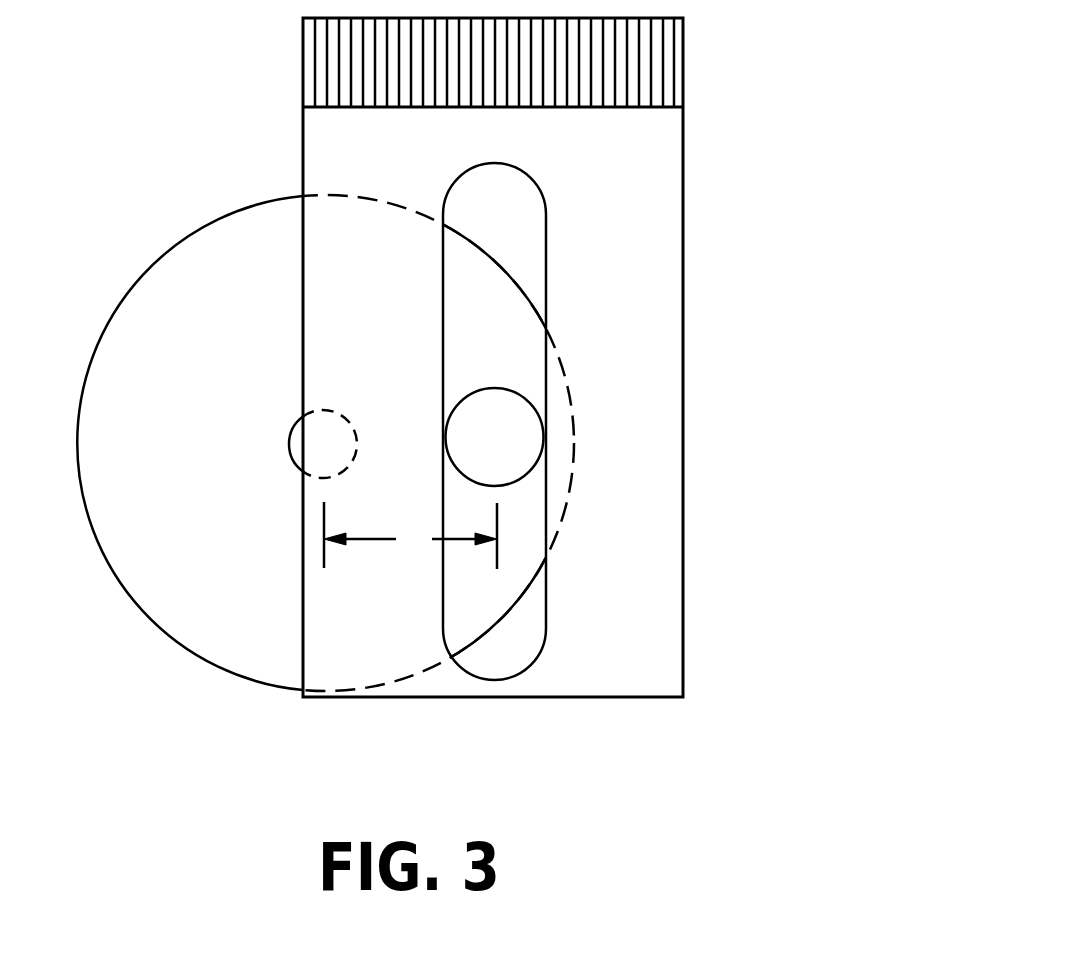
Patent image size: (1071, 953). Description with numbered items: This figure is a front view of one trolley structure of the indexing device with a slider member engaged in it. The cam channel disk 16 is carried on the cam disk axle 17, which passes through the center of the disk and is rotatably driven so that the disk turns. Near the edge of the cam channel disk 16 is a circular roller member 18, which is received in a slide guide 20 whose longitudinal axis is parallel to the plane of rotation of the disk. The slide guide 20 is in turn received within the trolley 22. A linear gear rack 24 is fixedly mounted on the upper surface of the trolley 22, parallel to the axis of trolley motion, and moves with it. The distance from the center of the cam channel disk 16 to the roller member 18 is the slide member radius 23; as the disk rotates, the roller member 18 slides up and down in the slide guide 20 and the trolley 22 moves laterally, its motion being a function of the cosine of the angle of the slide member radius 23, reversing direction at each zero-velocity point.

The cam channel disk 16 is at (260, 544).
The cam disk axle 17 is at (289, 441).
The roller member 18 is at (522, 456).
The slide guide 20 is at (546, 631).
The trolley 22 is at (642, 206).
The slide member radius 23 is at (417, 567).
The linear gear rack 24 is at (683, 74).